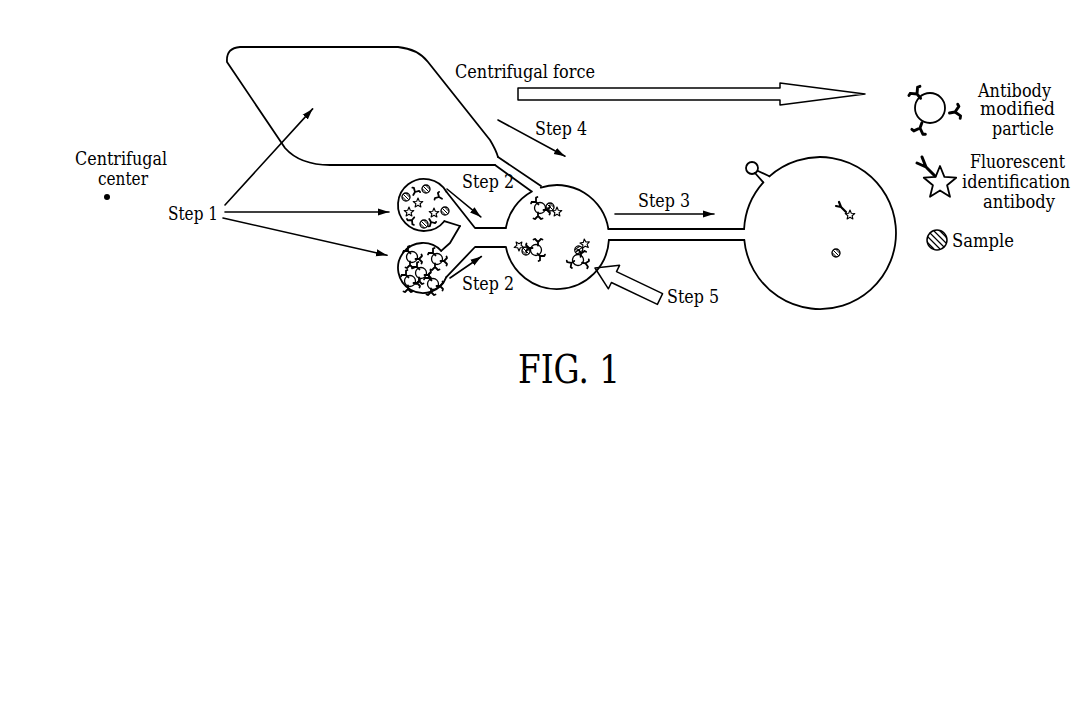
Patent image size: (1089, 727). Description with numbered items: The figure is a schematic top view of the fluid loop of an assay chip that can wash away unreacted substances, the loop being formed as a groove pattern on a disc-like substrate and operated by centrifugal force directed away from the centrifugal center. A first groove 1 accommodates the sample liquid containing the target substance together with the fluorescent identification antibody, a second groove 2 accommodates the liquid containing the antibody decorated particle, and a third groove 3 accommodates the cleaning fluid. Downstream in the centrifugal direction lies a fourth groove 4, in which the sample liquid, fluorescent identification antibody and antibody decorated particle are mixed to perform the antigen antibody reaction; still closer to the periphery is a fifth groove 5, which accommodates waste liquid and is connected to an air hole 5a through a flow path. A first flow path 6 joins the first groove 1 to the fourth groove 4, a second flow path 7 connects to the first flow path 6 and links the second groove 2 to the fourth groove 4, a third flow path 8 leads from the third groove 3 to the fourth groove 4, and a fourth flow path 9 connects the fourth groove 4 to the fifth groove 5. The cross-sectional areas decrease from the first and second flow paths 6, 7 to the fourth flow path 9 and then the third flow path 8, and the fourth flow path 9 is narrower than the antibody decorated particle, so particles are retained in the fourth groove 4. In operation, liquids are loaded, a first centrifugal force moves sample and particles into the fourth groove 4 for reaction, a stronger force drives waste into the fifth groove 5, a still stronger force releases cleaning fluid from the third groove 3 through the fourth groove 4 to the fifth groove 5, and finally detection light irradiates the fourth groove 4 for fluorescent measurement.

The first groove 1 is at (398, 188).
The second groove 2 is at (398, 282).
The third groove 3 is at (333, 55).
The fourth groove 4 is at (587, 197).
The fifth groove 5 is at (819, 170).
The air hole 5a is at (757, 162).
The first flow path 6 is at (457, 226).
The second flow path 7 is at (449, 243).
The third flow path 8 is at (517, 172).
The fourth flow path 9 is at (734, 229).